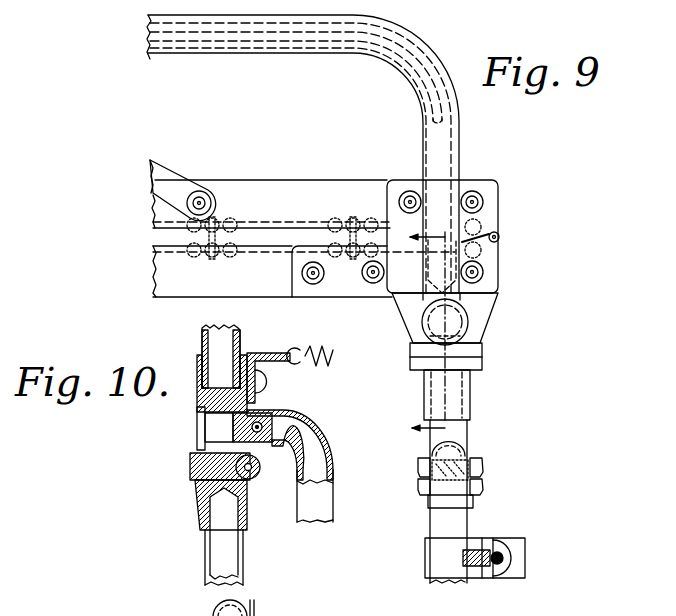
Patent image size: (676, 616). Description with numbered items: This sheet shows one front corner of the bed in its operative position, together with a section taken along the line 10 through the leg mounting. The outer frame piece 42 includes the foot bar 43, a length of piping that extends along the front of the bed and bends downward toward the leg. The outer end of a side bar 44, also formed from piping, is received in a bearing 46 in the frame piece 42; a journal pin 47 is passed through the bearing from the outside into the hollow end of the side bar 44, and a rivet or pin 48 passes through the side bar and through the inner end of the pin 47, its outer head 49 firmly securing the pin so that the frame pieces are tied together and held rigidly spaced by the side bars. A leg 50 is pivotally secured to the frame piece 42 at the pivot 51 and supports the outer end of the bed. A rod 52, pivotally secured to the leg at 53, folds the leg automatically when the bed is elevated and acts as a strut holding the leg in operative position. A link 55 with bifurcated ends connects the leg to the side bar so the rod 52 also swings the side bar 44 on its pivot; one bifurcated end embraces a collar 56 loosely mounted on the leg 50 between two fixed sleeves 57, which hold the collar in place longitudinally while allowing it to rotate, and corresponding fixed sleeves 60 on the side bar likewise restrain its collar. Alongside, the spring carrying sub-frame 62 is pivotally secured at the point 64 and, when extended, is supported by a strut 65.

In FIG. 9, the section line 10 is at (416, 333).
In FIG. 9, the outer frame piece 42 is at (255, 297).
In FIG. 10, the outer frame piece 42 is at (268, 362).
In FIG. 9, the foot bar 43 is at (291, 52).
In FIG. 10, the foot bar 43 is at (213, 348).
In FIG. 9, the side bar 44 is at (460, 330).
In FIG. 10, the side bar 44 is at (325, 500).
In FIG. 9, the bearing 46 is at (482, 350).
In FIG. 10, the bearing 46 is at (194, 455).
In FIG. 9, the pin 47 is at (420, 333).
In FIG. 10, the pin 47 is at (219, 427).
In FIG. 9, the rivet or pin 48 is at (425, 307).
In FIG. 10, the rivet or pin 48 is at (263, 428).
In FIG. 9, the head 49 is at (468, 313).
In FIG. 10, the head 49 is at (197, 416).
In FIG. 9, the leg 50 is at (462, 427).
In FIG. 10, the leg 50 is at (230, 558).
In FIG. 9, the leg pivot 51 is at (478, 372).
In FIG. 10, the leg pivot 51 is at (253, 478).
In FIG. 9, the rod 52 is at (512, 545).
In FIG. 9, the rod pivot 53 is at (482, 545).
In FIG. 9, the link 55 is at (468, 470).
In FIG. 9, the collar 56 is at (474, 496).
In FIG. 9, the fixed sleeve 57 is at (418, 468).
In FIG. 9, the fixed sleeve 60 is at (470, 453).
In FIG. 9, the spring carrying sub-frame 62 is at (250, 185).
In FIG. 9, the pivot point 64 is at (499, 236).
In FIG. 9, the strut 65 is at (166, 172).